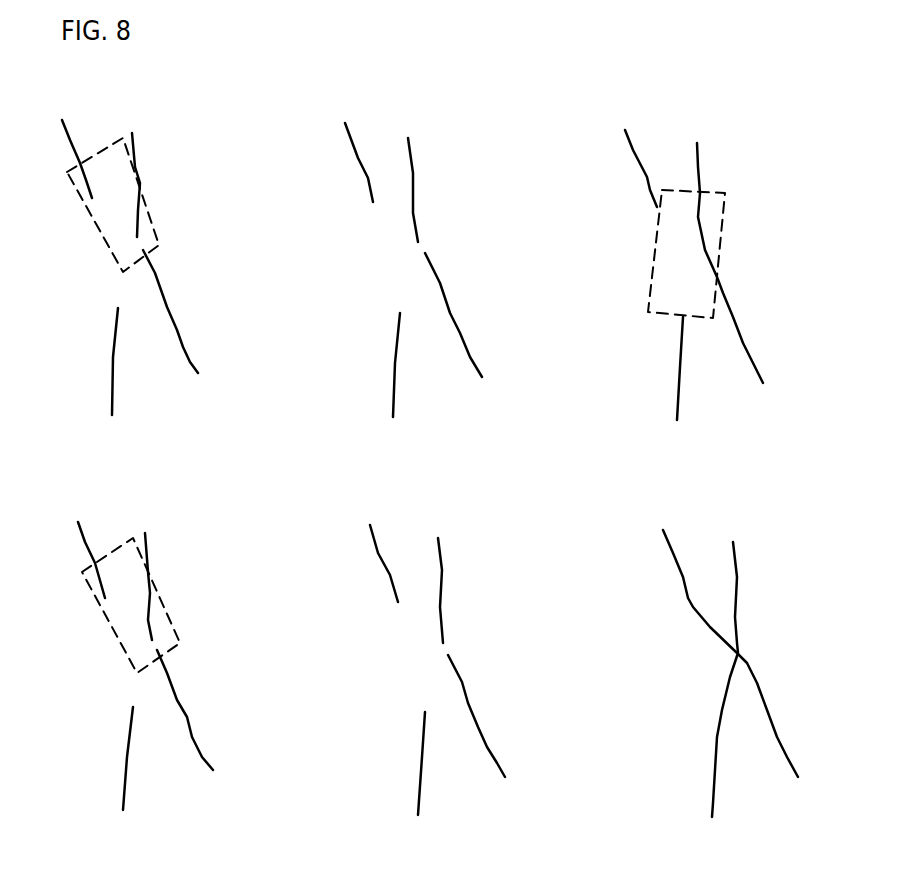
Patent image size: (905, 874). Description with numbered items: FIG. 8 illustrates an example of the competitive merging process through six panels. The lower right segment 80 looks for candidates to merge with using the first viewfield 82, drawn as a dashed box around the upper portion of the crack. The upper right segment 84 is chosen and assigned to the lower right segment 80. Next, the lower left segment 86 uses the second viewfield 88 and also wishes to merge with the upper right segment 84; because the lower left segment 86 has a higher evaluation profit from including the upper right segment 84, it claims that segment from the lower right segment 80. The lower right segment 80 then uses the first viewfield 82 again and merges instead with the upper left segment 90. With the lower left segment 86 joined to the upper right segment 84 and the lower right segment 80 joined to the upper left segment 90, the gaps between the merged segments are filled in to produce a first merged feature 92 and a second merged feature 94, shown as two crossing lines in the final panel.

The lower right segment 80 is at (178, 330).
The first viewfield 82 is at (160, 217).
The upper right segment 84 is at (416, 179).
The lower left segment 86 is at (675, 383).
The second viewfield 88 is at (655, 260).
The upper left segment 90 is at (86, 547).
The first merged feature 92 is at (713, 763).
The second merged feature 94 is at (780, 743).